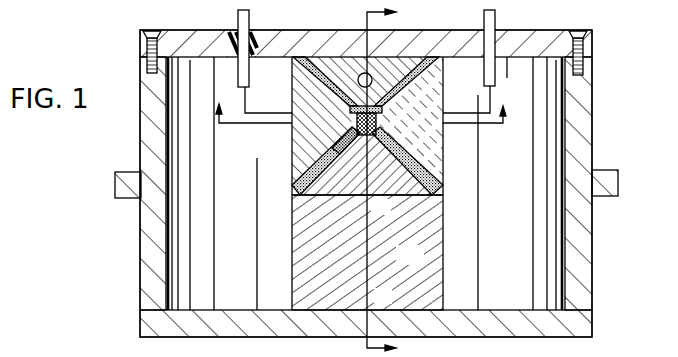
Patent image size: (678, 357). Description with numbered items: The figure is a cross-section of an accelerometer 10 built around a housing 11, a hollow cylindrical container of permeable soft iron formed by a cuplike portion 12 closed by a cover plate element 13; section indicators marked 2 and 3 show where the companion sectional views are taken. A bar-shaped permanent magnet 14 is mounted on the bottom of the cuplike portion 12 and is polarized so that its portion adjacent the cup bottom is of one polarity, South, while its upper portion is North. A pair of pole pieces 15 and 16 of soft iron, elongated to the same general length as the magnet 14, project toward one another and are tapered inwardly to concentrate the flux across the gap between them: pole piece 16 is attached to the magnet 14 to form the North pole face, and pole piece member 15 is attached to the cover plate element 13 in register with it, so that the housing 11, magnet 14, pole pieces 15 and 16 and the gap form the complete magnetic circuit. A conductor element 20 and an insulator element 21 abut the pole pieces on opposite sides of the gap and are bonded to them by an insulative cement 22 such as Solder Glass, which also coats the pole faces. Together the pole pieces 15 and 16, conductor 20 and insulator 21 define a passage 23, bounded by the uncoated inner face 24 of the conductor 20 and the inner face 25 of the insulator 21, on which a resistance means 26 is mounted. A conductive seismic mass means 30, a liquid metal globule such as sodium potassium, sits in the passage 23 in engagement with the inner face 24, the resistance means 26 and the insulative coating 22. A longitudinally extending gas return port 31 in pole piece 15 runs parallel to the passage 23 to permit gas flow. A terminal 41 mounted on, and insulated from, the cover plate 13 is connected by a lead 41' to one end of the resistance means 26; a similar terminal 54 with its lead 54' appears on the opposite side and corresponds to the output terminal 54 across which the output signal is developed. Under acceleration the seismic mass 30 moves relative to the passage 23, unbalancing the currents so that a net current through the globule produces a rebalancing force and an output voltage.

The accelerometer 10 is at (636, 69).
The housing 11 is at (601, 157).
The cuplike portion 12 is at (594, 258).
The cover plate element 13 is at (540, 30).
The permanent magnet 14 is at (421, 263).
The pole piece member 15 is at (343, 63).
The pole piece 16 is at (418, 190).
The conductor element 20 is at (303, 158).
The insulator element 21 is at (440, 166).
The insulative cement 22 is at (297, 190).
The passage 23 is at (354, 118).
The inner face 24 is at (353, 128).
The inner face 25 is at (383, 116).
The resistance means 26 is at (380, 129).
The conductive seismic mass means 30 is at (369, 135).
The gas return port 31 is at (373, 80).
The terminal 41 is at (471, 47).
The lead 41' is at (466, 99).
The output terminal 54 is at (257, 46).
The left rod end 54' is at (268, 100).
The section line 2- 2 is at (388, 181).
The section line 3- 3 is at (361, 105).